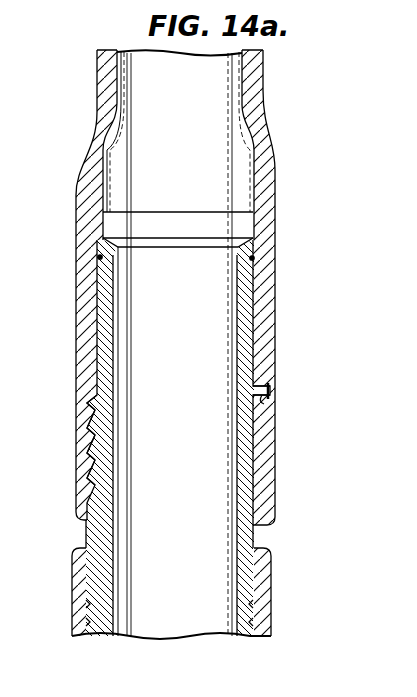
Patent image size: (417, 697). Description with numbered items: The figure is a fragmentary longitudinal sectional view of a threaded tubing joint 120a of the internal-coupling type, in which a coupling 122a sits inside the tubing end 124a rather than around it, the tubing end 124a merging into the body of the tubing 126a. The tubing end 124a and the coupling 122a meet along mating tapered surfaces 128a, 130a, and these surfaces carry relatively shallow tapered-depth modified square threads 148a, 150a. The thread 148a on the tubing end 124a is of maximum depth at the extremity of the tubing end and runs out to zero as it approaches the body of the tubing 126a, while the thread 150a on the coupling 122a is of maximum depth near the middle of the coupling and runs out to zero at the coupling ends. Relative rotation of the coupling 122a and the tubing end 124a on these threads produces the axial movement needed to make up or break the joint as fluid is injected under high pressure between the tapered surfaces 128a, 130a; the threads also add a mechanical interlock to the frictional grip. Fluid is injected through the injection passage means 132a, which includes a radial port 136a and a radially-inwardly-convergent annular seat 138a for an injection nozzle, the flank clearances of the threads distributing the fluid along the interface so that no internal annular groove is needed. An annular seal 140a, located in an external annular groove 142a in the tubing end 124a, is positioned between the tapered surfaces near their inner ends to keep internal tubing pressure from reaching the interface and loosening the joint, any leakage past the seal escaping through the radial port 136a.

The threaded tubing joint 120a is at (62, 342).
The coupling 122a is at (250, 540).
The tubing end 124a is at (267, 312).
The body of the tubing 126a is at (100, 88).
The tapered surface 128a is at (96, 399).
The tapered surface 130a is at (88, 438).
The injection passage means 132a is at (275, 392).
The radial port 136a is at (270, 400).
The annular seat 138a is at (276, 386).
The annular seal 140a is at (254, 259).
The annular groove 142a is at (98, 257).
The thread 148a is at (88, 463).
The thread 150a is at (84, 487).